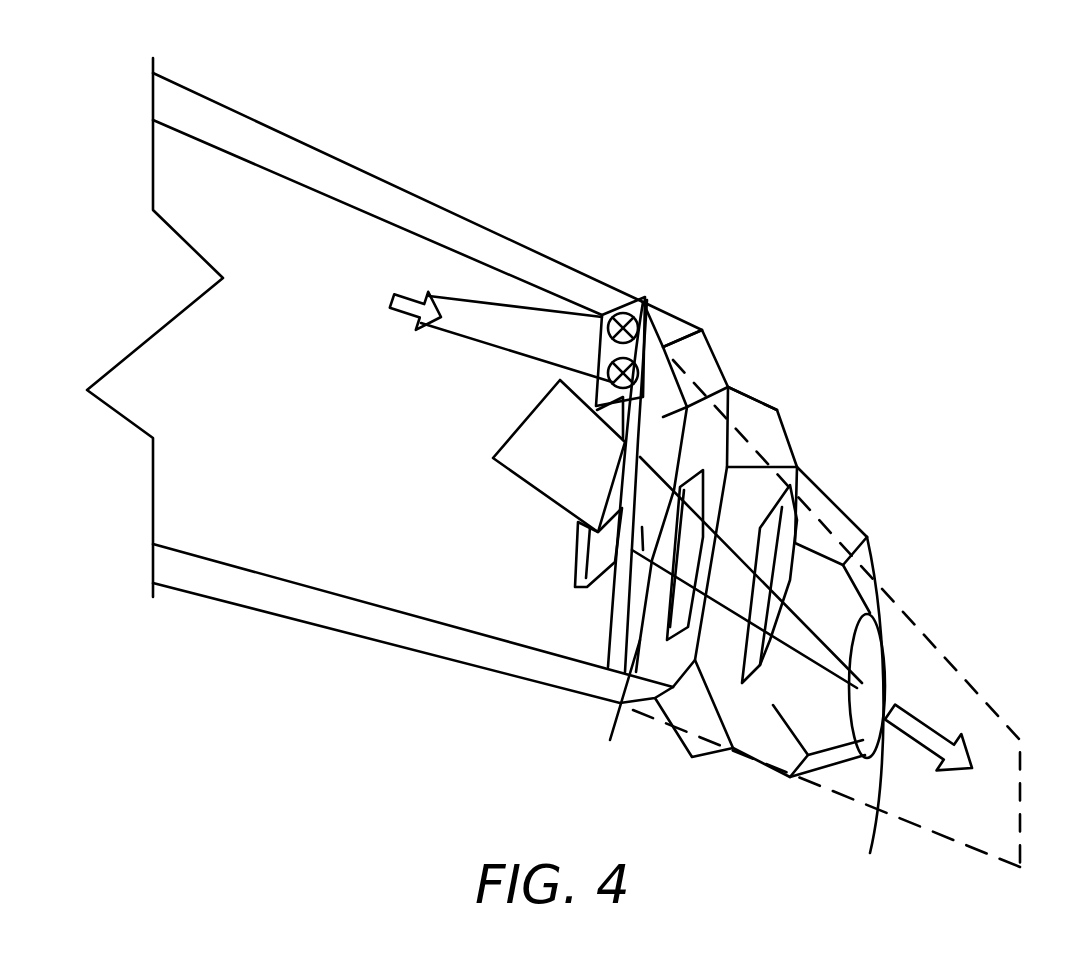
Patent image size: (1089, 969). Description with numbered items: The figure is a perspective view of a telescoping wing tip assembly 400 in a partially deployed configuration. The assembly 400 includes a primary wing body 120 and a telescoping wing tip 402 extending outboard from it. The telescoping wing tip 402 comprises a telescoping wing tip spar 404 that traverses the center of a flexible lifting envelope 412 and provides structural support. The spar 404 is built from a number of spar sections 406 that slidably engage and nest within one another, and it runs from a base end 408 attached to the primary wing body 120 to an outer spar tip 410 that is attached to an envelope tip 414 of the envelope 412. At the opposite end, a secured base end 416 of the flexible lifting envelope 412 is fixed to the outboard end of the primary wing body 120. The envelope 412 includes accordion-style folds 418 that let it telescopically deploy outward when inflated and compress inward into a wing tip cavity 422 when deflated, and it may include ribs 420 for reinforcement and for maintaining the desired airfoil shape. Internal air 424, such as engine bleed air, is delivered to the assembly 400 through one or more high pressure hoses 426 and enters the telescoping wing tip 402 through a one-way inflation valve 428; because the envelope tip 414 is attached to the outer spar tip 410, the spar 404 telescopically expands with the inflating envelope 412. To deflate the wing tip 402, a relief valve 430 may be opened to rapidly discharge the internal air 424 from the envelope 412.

The primary wing body 120 is at (278, 152).
The telescoping wing tip assembly 400 is at (980, 123).
The telescoping wing tip 402 is at (895, 488).
The telescoping wing tip spar 404 is at (465, 460).
The spar section 406 is at (611, 701).
The base end 408 is at (520, 438).
The outer spar tip 410 is at (859, 709).
The flexible lifting envelope 412 is at (767, 437).
The envelope tip 414 is at (872, 645).
The secured base end 416 is at (592, 617).
The accordion-style folds 418 is at (733, 763).
The ribs 420 is at (767, 537).
The wing tip cavity 422 is at (663, 417).
The internal air 424 is at (359, 300).
The high pressure hoses 426 is at (515, 340).
The inflation valve 428 is at (662, 308).
The relief valve 430 is at (630, 317).